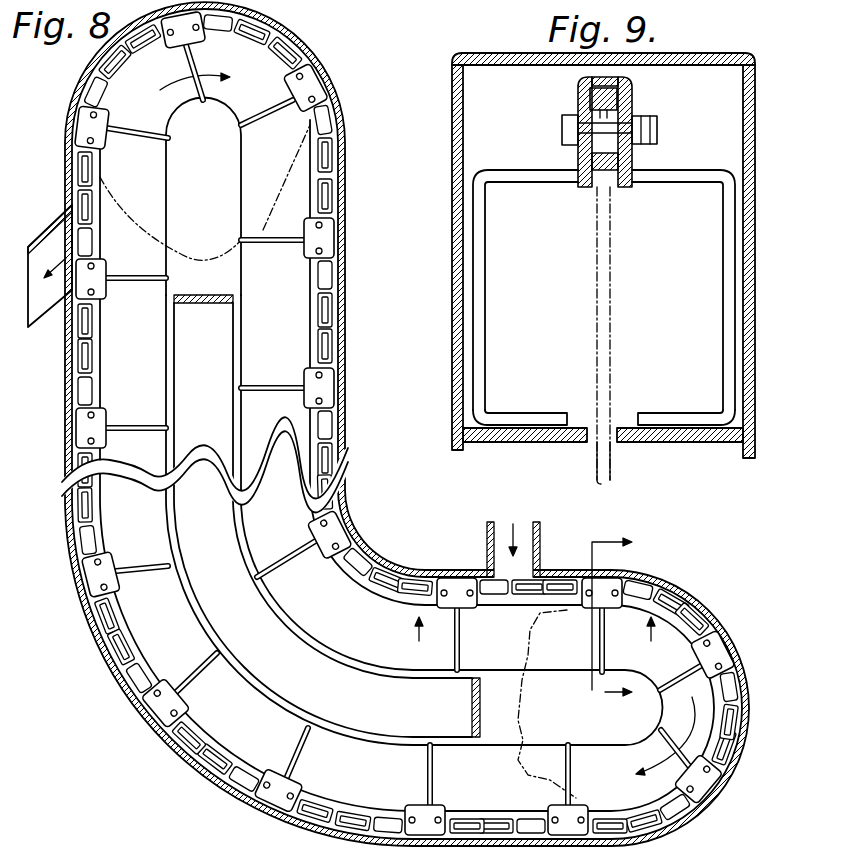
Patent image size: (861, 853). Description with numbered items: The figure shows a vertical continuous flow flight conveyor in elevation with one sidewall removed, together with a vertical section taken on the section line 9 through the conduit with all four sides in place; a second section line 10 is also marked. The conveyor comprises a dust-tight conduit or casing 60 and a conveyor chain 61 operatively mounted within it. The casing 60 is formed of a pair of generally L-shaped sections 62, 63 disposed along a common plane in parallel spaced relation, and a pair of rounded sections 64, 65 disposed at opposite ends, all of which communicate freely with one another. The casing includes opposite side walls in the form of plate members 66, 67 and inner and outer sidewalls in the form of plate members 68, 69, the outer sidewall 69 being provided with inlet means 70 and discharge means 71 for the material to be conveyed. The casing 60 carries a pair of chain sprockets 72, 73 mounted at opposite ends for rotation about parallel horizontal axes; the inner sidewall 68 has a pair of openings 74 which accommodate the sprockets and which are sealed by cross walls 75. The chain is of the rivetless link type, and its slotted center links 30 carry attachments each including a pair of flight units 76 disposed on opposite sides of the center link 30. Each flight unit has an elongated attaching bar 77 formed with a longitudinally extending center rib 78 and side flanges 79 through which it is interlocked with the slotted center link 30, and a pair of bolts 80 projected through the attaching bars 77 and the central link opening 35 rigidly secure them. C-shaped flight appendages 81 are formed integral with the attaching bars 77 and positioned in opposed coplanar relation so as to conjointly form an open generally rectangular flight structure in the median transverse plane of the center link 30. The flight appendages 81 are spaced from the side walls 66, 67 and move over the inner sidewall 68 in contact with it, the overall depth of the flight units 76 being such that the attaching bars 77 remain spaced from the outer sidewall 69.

In FIG. 8, the section line 9— 9 is at (599, 611).
In FIG. 8, the section line 10— 10 is at (524, 629).
In FIG. 8, the center link 30 is at (306, 368).
In FIG. 9, the center link 30 is at (600, 174).
In FIG. 9, the central link opening 35 is at (630, 108).
In FIG. 8, the casing 60 is at (127, 697).
In FIG. 8, the conveyor chain 61 is at (304, 488).
In FIG. 8, the L-shaped section 62 is at (140, 627).
In FIG. 8, the L-shaped section 63 is at (300, 437).
In FIG. 8, the rounded section 64 is at (258, 73).
In FIG. 8, the rounded section 65 is at (720, 708).
In FIG. 9, the side wall 66 is at (450, 262).
In FIG. 9, the side wall 67 is at (756, 257).
In FIG. 9, the inner sidewall 68 is at (532, 434).
In FIG. 9, the outer sidewall 69 is at (514, 57).
In FIG. 8, the inlet means 70 is at (527, 537).
In FIG. 8, the discharge means 71 is at (50, 227).
In FIG. 8, the chain sprocket 72 is at (264, 228).
In FIG. 8, the chain sprocket 73 is at (527, 700).
In FIG. 8, the opening 74 is at (172, 182).
In FIG. 8, the cross wall 75 is at (198, 307).
In FIG. 8, the flight unit 76 is at (127, 427).
In FIG. 9, the flight unit 76 is at (484, 251).
In FIG. 8, the attaching bar 77 is at (312, 250).
In FIG. 9, the attaching bar 77 is at (578, 106).
In FIG. 9, the center rib 78 is at (579, 150).
In FIG. 9, the side flange 79 is at (590, 82).
In FIG. 9, the bolt 80 is at (561, 130).
In FIG. 9, the flight appendage 81 is at (486, 325).